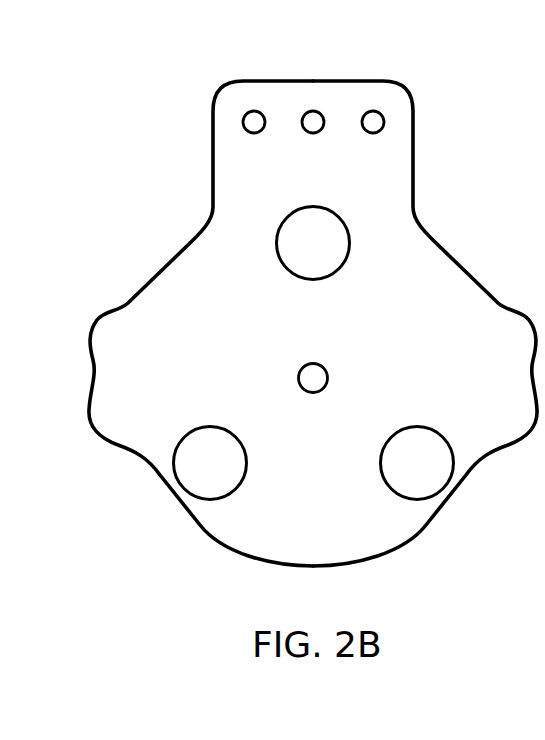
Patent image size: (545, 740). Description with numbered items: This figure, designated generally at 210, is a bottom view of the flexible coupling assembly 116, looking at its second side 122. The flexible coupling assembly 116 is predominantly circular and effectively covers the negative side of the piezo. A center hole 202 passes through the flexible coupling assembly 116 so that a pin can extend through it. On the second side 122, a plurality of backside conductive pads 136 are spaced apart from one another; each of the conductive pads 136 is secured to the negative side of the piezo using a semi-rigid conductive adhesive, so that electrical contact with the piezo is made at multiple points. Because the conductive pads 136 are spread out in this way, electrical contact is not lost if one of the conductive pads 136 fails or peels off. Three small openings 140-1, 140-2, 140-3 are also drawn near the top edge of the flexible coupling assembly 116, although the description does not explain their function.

The flexible coupling assembly 116 is at (433, 227).
The second side 122 is at (340, 190).
The backside conductive pads 136 is at (340, 270).
The first small aperture 140-1 is at (373, 111).
The second small aperture 140-2 is at (313, 111).
The third small aperture 140-3 is at (253, 111).
The center hole 202 is at (328, 378).
The bottom view of flexible coupling assembly 210 is at (128, 139).